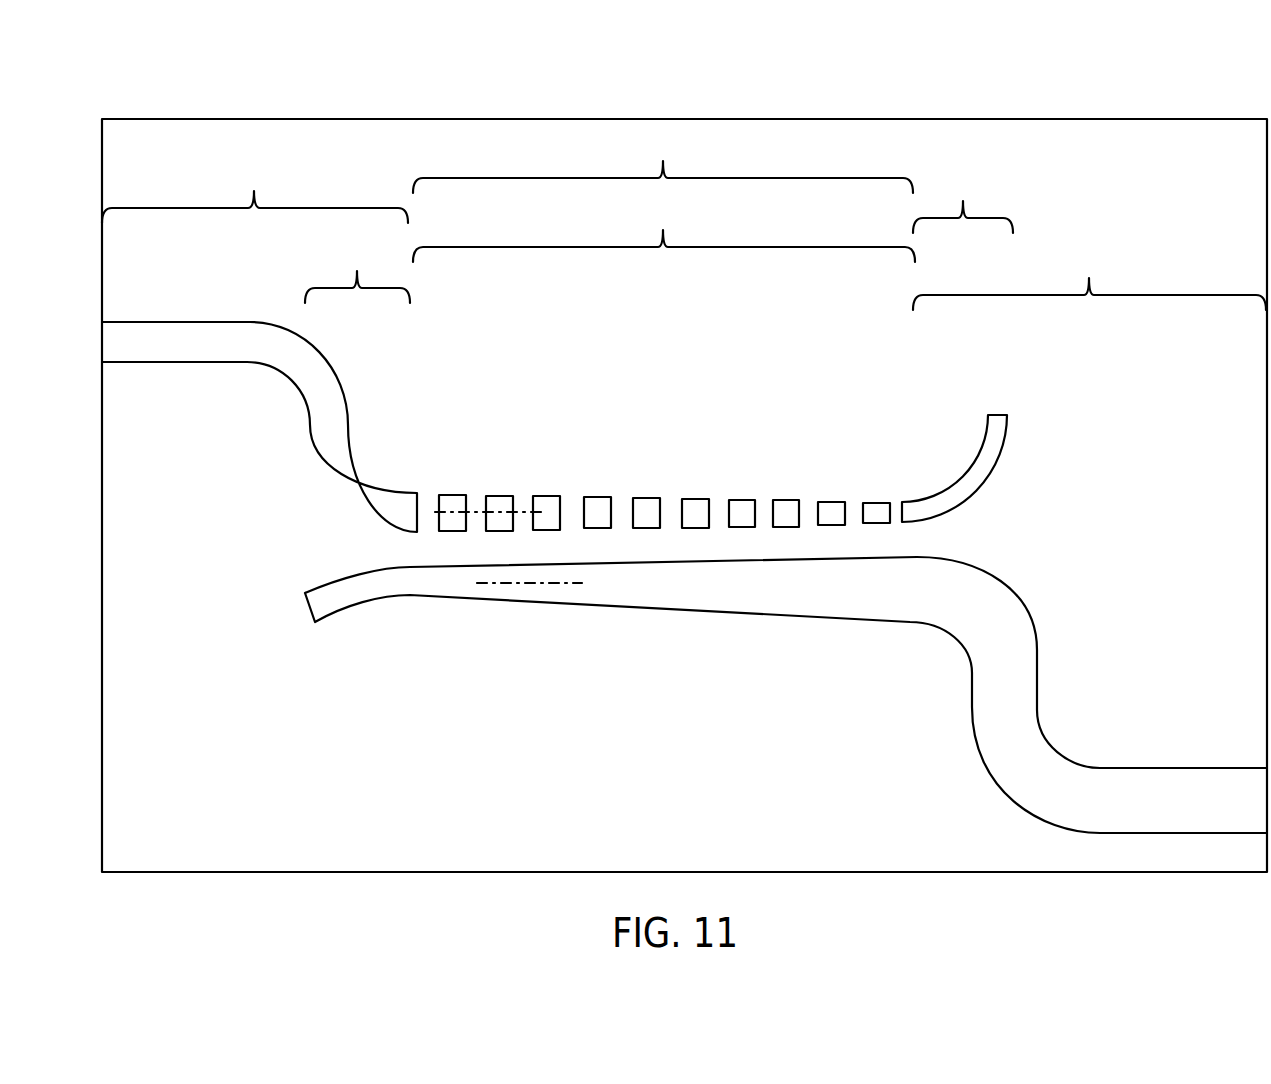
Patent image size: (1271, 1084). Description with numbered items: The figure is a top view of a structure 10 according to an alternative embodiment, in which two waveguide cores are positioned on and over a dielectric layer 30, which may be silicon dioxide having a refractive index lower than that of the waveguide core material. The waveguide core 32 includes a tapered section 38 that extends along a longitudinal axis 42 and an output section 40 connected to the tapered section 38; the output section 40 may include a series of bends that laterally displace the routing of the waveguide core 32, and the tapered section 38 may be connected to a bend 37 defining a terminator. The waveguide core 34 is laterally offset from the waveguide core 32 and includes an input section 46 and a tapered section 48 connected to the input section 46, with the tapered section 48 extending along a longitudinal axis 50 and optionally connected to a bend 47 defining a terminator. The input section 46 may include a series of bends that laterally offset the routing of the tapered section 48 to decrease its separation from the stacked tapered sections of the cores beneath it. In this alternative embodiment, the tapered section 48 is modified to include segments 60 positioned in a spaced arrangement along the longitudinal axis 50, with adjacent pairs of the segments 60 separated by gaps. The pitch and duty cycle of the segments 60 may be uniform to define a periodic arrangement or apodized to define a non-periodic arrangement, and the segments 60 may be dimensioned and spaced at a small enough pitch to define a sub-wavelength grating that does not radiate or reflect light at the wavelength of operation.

The structure 10 is at (130, 105).
The dielectric layer 30 is at (155, 815).
The waveguide core 32 is at (650, 578).
The waveguide core 34 is at (328, 442).
The bend 37 is at (357, 271).
The tapered section 38 is at (664, 227).
The output section 40 is at (1089, 276).
The longitudinal axis 42 is at (510, 583).
The input section 46 is at (255, 186).
The bend 47 is at (963, 200).
The tapered section 48 is at (663, 160).
The longitudinal axis 50 is at (475, 510).
The segments 60 is at (600, 513).